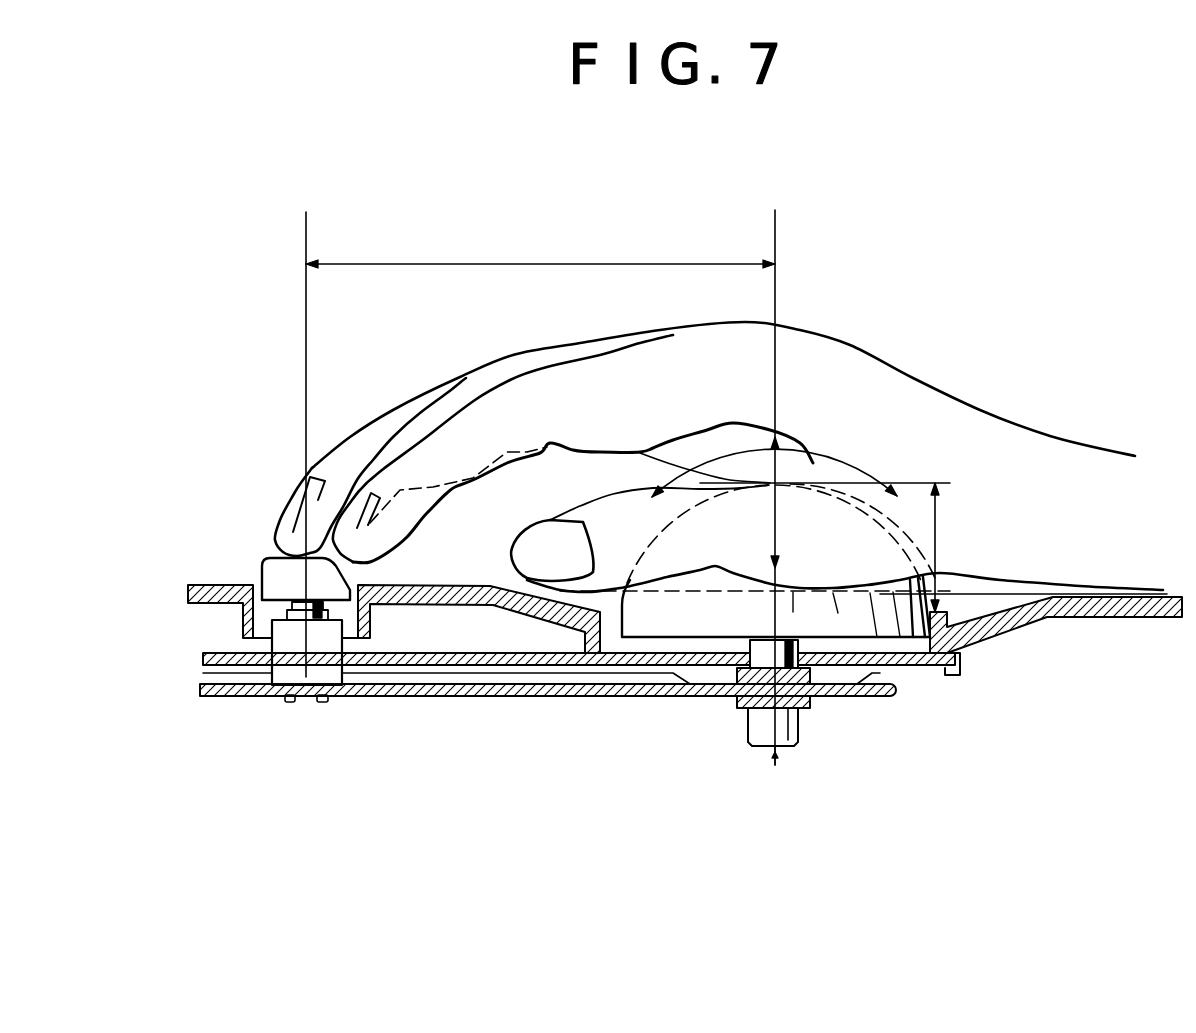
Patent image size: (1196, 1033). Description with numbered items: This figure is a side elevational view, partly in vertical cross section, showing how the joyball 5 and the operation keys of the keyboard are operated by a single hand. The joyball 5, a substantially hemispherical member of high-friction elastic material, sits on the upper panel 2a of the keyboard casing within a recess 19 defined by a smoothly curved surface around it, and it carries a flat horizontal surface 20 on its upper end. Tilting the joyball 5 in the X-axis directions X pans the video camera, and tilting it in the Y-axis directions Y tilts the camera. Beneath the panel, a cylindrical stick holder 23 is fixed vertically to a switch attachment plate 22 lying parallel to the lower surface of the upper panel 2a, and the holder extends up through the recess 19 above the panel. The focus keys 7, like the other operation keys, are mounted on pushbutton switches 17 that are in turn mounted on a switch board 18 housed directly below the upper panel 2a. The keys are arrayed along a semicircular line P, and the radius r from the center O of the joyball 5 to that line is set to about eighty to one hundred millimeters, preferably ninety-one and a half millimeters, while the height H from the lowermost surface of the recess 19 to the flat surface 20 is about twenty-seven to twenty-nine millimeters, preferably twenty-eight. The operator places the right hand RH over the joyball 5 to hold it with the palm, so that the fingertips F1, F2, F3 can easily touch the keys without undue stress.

The joyball 5 is at (910, 632).
The focus keys 7 is at (270, 573).
The pushbutton switches 17 is at (283, 637).
The switch board 18 is at (417, 693).
The recess 19 is at (595, 642).
The flat horizontal surface 20 is at (787, 472).
The switch attachment plate 22 is at (492, 670).
The stick holder 23 is at (800, 733).
The upper panel 2a is at (1127, 613).
The semicircular line P is at (305, 231).
The center of the joyball O is at (777, 236).
The radius r is at (553, 262).
The right hand RH is at (724, 437).
The fingertip F1 is at (530, 543).
The fingertip F2 is at (358, 517).
The fingertip F3 is at (290, 513).
The X-axis directions X is at (779, 541).
The Y-axis directions Y is at (863, 478).
The height H is at (938, 527).